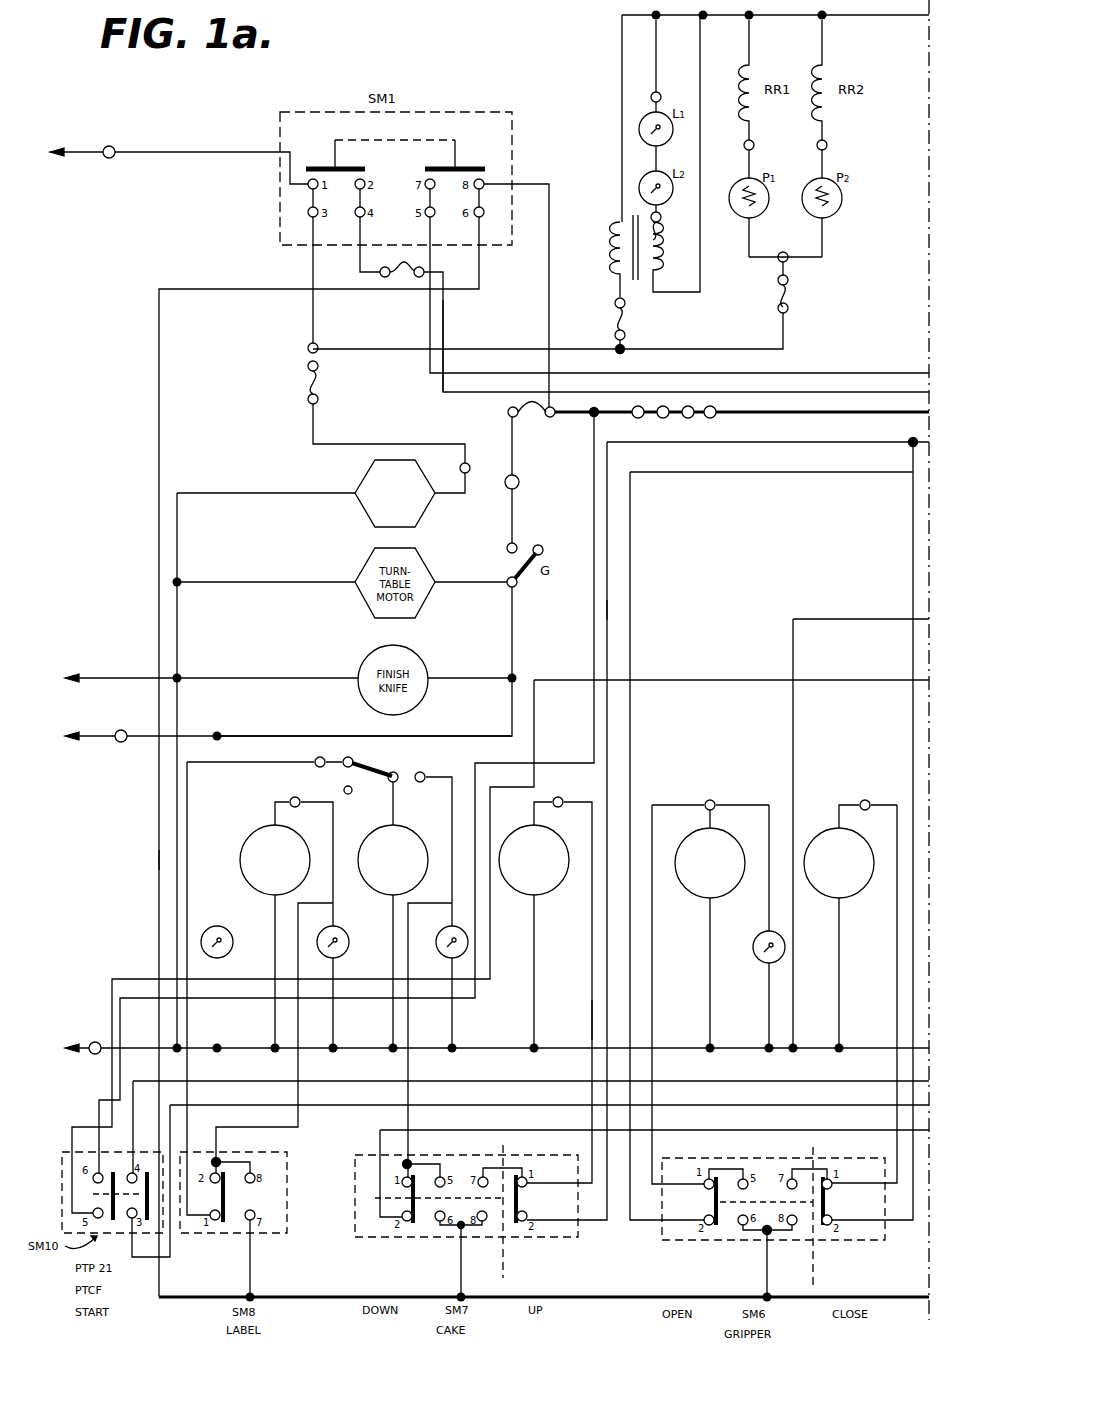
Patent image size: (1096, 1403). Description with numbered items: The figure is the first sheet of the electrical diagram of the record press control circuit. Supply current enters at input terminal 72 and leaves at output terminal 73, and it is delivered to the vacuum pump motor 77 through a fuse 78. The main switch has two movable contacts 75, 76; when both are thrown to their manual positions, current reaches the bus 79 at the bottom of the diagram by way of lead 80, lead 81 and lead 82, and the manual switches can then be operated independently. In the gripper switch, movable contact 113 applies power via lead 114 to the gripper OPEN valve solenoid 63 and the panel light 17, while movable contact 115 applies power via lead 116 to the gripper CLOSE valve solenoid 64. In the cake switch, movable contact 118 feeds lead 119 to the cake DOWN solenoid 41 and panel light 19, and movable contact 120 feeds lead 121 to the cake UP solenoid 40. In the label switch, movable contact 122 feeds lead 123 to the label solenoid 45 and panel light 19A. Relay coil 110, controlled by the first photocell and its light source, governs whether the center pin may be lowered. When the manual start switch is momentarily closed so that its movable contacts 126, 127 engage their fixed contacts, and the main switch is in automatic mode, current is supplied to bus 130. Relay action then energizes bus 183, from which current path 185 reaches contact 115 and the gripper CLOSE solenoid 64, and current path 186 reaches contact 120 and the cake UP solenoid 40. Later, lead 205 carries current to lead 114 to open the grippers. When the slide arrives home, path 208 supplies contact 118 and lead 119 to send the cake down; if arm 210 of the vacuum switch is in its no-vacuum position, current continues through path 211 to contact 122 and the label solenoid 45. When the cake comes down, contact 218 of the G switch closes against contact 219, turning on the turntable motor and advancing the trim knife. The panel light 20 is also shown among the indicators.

The supply current input terminal 72 is at (115, 152).
The movable contact of main switch SM1 75 is at (324, 164).
The movable contact of main switch SM1 76 is at (466, 164).
The relay coil of relay RR1 110 is at (740, 93).
The lead 82 is at (480, 270).
The lead 81 is at (430, 320).
The lead 80 is at (443, 340).
The fuse 78 is at (322, 388).
The bus 130 is at (790, 418).
The bus 183 is at (880, 444).
The lead 205 is at (738, 474).
The current path 186 is at (608, 608).
The current path 185 is at (912, 592).
The contact of G switch 219 is at (520, 548).
The contact of G switch 218 is at (514, 590).
The vacuum pump motor 77 is at (362, 516).
The path 211 is at (159, 860).
The arm of vacuum switch D2 210 is at (387, 780).
The label solenoid 45 is at (271, 894).
The indicator lamp 20 is at (222, 948).
The panel light 19A is at (342, 948).
The panel light 19 is at (444, 948).
The lead 123 is at (299, 1118).
The cake DOWN solenoid 41 is at (388, 894).
The lead 119 is at (410, 1022).
The cake UP solenoid 40 is at (538, 896).
The lead 121 is at (592, 1032).
The gripper OPEN valve solenoid 63 is at (706, 898).
The lead 114 is at (652, 995).
The panel light 17 is at (756, 936).
The gripper CLOSE valve solenoid 64 is at (843, 898).
The lead 116 is at (897, 1012).
The supply current output terminal 73 is at (98, 1030).
The movable contact of start switch SM10 127 is at (172, 1257).
The path 208 is at (760, 1132).
The movable contact of start switch SM10 126 is at (93, 1183).
The movable contact of switch SM8 122 is at (226, 1190).
The bus 79 is at (318, 1300).
The movable contact of switch SM7 118 is at (410, 1193).
The movable contact of switch SM7 120 is at (520, 1203).
The movable contact of switch SM6 113 is at (714, 1206).
The movable contact of switch SM6 115 is at (826, 1206).